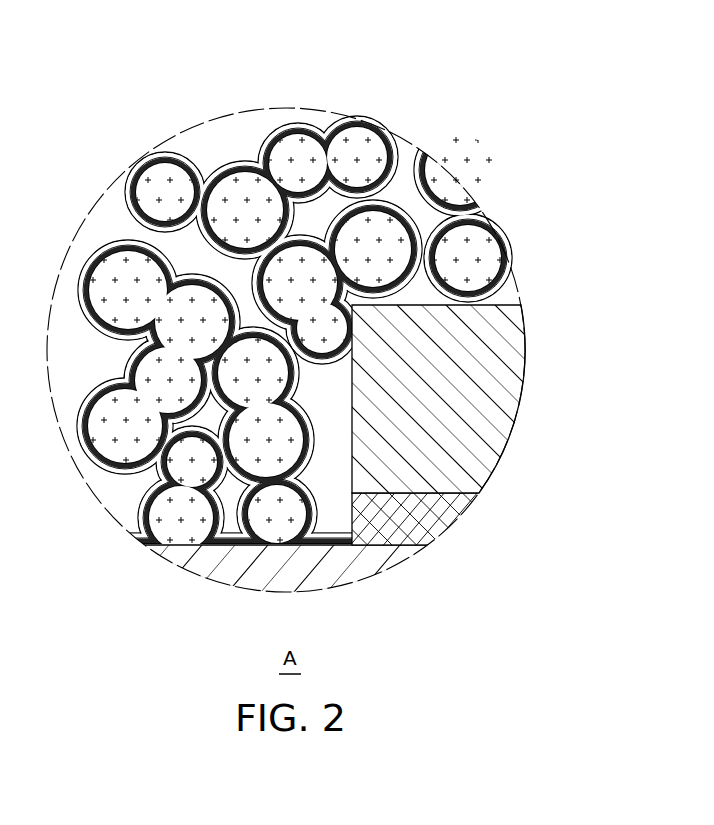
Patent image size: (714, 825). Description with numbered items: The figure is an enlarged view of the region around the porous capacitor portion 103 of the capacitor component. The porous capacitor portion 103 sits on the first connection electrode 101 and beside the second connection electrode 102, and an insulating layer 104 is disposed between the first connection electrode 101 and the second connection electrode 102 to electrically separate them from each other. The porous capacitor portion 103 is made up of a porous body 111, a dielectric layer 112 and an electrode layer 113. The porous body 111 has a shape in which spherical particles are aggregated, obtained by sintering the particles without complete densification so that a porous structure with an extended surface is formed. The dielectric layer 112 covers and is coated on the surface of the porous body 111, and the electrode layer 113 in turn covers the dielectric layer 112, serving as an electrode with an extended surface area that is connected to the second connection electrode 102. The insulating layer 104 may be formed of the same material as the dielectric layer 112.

The first connection electrode 101 is at (382, 567).
The second connection electrode 102 is at (507, 402).
The porous capacitor portion 103 is at (357, 376).
The insulating layer 104 is at (455, 520).
The porous body 111 is at (374, 122).
The dielectric layer 112 is at (328, 130).
The electrode layer 113 is at (297, 123).